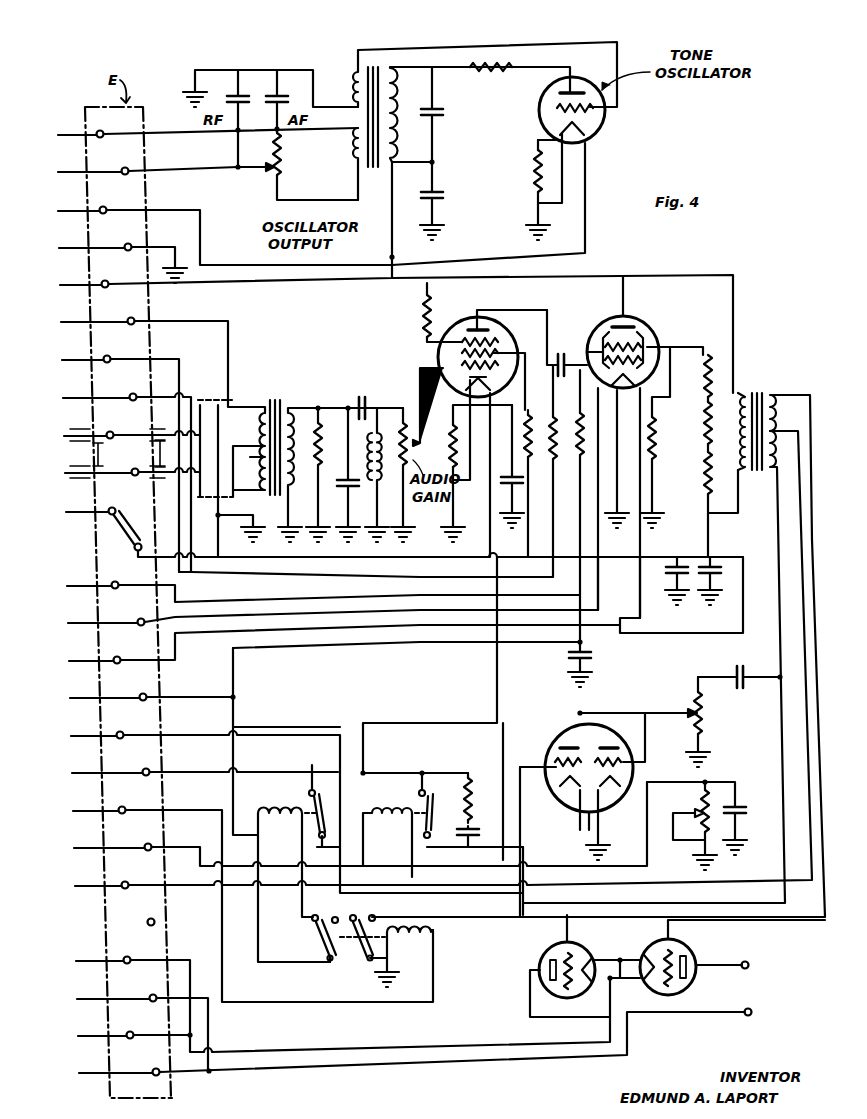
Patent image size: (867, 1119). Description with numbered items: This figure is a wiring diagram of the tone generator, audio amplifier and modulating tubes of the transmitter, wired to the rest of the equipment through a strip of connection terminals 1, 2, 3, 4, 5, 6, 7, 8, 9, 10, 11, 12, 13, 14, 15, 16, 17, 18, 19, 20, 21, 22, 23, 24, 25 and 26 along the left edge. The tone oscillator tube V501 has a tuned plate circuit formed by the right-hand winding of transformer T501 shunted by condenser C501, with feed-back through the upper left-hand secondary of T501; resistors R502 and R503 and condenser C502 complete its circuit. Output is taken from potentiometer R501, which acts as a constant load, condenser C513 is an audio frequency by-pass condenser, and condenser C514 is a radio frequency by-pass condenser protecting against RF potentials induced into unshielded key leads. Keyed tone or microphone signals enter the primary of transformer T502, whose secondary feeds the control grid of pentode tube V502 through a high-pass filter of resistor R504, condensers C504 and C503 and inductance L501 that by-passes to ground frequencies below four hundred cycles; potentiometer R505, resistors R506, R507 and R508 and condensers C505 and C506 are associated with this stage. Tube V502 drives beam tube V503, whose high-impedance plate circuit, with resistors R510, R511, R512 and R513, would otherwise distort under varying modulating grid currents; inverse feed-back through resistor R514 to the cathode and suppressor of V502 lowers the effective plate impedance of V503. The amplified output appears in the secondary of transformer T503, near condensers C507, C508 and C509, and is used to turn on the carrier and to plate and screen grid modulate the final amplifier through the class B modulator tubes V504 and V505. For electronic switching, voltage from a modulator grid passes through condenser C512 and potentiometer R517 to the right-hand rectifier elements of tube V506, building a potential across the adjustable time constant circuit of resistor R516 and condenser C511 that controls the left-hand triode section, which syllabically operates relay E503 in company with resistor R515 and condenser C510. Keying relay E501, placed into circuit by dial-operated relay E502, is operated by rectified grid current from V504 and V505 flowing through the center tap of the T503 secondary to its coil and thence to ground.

The terminal 1 (F30) 1 is at (192, 127).
The terminal 2 (F19) 2 is at (151, 165).
The terminal 3 (P7) 3 is at (307, 204).
The terminal 4 (P19) 4 is at (108, 254).
The terminal 5 (F29) 5 is at (381, 277).
The terminal 6 (F17) 6 is at (148, 356).
The terminal 7 (F26) 7 is at (105, 455).
The terminal 8 (F6) 8 is at (112, 474).
The terminal 9 (F31) 9 is at (117, 440).
The terminal 10 (F32) 10 is at (117, 465).
The terminal 11 (P19) 11 is at (88, 517).
The terminal 12 is at (426, 548).
The terminal 13 (P24) 13 is at (308, 590).
The terminal 14 (F15) 14 is at (318, 593).
The terminal 15 (P7) 15 is at (391, 612).
The terminal 16 (F27) 16 is at (138, 690).
The terminal 17 (P28) 17 is at (282, 803).
The terminal 18 (C13) 18 is at (190, 765).
The terminal 19 (P37) 19 is at (238, 895).
The terminal 20 (F9) 20 is at (345, 824).
The terminal 21 (P28) 21 is at (428, 662).
The terminal 22 is at (152, 913).
The terminal 23 (F12) 23 is at (328, 995).
The terminal 24 (F23) 24 is at (127, 1023).
The terminal 25 (P5) 25 is at (120, 1028).
The terminal 26 (P6) 26 is at (397, 1046).
The radio frequency by-pass condenser C514 is at (230, 92).
The audio frequency by-pass condenser C513 is at (281, 92).
The transformer T501 is at (366, 60).
The potentiometer R501 is at (272, 180).
The resistor R502 is at (478, 80).
The resistor R503 is at (535, 156).
The condenser C501 is at (444, 115).
The capacitor C502 is at (446, 198).
The tone oscillator tube V501 is at (600, 128).
The transformer T502 is at (272, 401).
The resistor R504 is at (323, 412).
The condenser C503 is at (362, 396).
The condenser C504 is at (346, 515).
The inductance L501 is at (378, 515).
The audio gain potentiometer R505 is at (406, 412).
The resistor R514 is at (424, 318).
The audio amplifier tube V502 is at (470, 330).
The resistor R506 is at (476, 473).
The capacitor C506 is at (509, 466).
The resistor R507 is at (540, 463).
The resistor R508 is at (546, 471).
The coupling capacitor C505 is at (560, 345).
The audio amplifier tube V503 is at (647, 330).
The resistor R510 is at (647, 474).
The resistor R511 is at (696, 370).
The resistor R512 is at (696, 420).
The resistor R513 is at (709, 500).
The coupling transformer T503 is at (758, 390).
The capacitor C507 is at (571, 658).
The capacitor C508 is at (658, 582).
The capacitor C509 is at (735, 582).
The keying relay E501 is at (298, 863).
The relay E503 is at (441, 823).
The relay E502 is at (373, 951).
The resistor R515 is at (478, 754).
The capacitor C510 is at (476, 833).
The electronic switching tube V506 is at (583, 735).
The potentiometer R517 is at (687, 700).
The condenser C512 is at (739, 672).
The resistor R516 is at (710, 784).
The condenser C511 is at (739, 814).
The modulator tube V504 is at (542, 950).
The modulator tube V505 is at (693, 950).